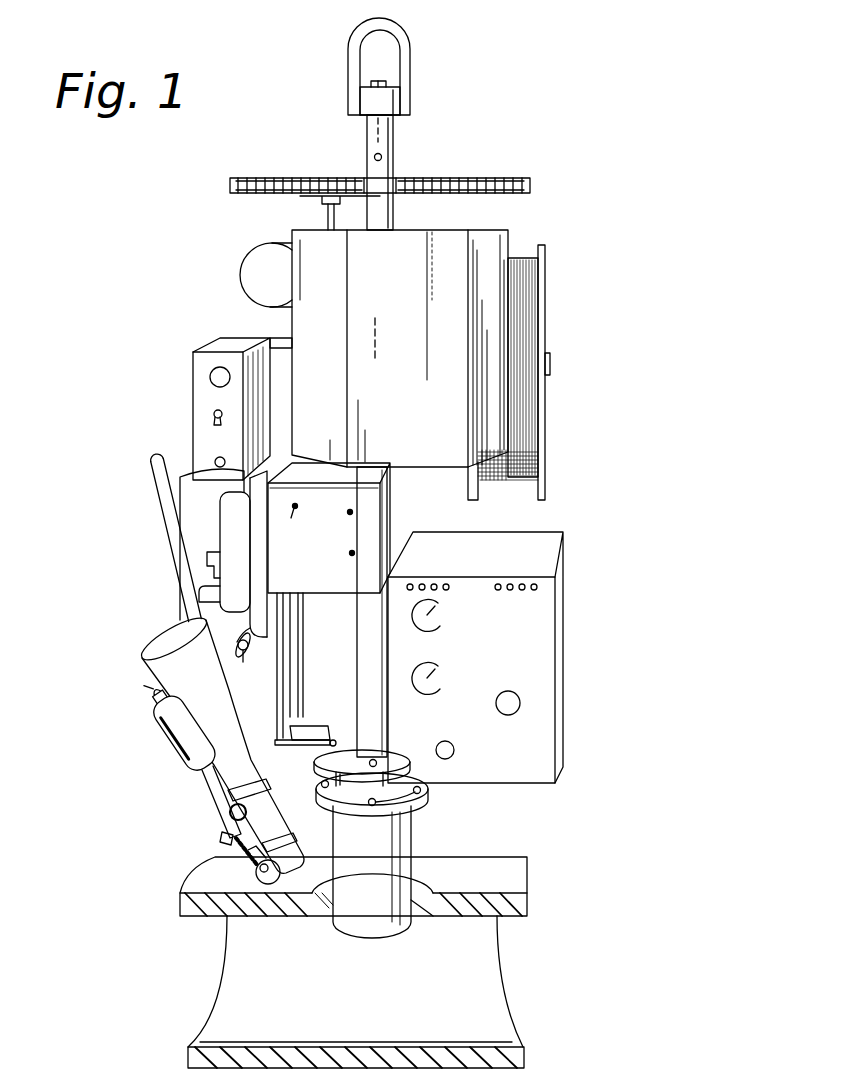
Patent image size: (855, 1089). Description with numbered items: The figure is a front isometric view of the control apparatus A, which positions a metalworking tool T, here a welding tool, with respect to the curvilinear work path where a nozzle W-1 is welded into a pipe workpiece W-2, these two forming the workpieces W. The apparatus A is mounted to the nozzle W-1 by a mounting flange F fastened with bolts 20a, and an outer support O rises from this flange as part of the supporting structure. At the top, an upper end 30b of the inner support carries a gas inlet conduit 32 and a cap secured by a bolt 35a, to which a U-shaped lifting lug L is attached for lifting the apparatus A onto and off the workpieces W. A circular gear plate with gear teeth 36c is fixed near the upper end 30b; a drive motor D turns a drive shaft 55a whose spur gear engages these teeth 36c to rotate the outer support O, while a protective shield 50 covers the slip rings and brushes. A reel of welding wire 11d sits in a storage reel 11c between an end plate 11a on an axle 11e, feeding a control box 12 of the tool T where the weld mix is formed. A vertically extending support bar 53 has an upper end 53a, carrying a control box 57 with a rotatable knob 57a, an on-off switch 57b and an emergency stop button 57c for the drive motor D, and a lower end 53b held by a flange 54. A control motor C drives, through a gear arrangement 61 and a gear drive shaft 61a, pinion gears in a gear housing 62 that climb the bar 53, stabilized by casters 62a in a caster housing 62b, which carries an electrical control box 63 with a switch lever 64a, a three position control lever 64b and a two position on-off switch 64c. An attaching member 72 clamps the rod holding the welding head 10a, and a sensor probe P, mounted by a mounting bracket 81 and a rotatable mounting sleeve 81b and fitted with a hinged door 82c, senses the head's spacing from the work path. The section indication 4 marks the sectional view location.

The lifting lug L is at (405, 45).
The bolt 35a is at (384, 82).
The upper end of inner support 30b is at (394, 209).
The section line 4 is at (358, 128).
The gas inlet conduit 32 is at (381, 155).
The gear teeth 36c is at (532, 189).
The drive shaft 55a is at (326, 211).
The protective shield 50 is at (440, 252).
The drive motor D is at (258, 250).
The control apparatus A is at (638, 296).
The storage reel 11c is at (515, 258).
The welding wire 11d is at (525, 408).
The end plate 11a is at (542, 352).
The axle 11e is at (552, 366).
The control box 57 is at (192, 349).
The rotatable knob 57a is at (218, 368).
The on-off switch 57b is at (215, 414).
The emergency stop button 57c is at (217, 458).
The upper end of support bar 53a is at (284, 343).
The control motor C is at (176, 457).
The pinion gear housing 62 is at (230, 527).
The vertically extending support bar 53 is at (290, 650).
The gear arrangement 61 is at (205, 560).
The gear drive shaft 61a is at (220, 600).
The attaching member 72 is at (224, 654).
The electrical control box 63 is at (319, 579).
The switch lever 64a is at (293, 523).
The three position control lever 64b is at (352, 512).
The two position on-off switch 64c is at (353, 551).
The caster housing 62b is at (287, 605).
The casters 62a is at (283, 627).
The lower end of support bar 53b is at (307, 726).
The flange 54 is at (306, 748).
The outer support O is at (356, 679).
The mounting flange F is at (318, 797).
The bolts 20a is at (440, 802).
The nozzle workpiece W-1 is at (413, 827).
The pipe workpiece W-2 is at (505, 882).
The workpieces W is at (540, 855).
The control box 12 is at (545, 652).
The metalworking tool T is at (578, 722).
The welding head 10a is at (155, 662).
The sensor probe P is at (158, 752).
The door 82c is at (160, 722).
The mounting bracket 81 is at (231, 811).
The mounting sleeve 81b is at (222, 838).